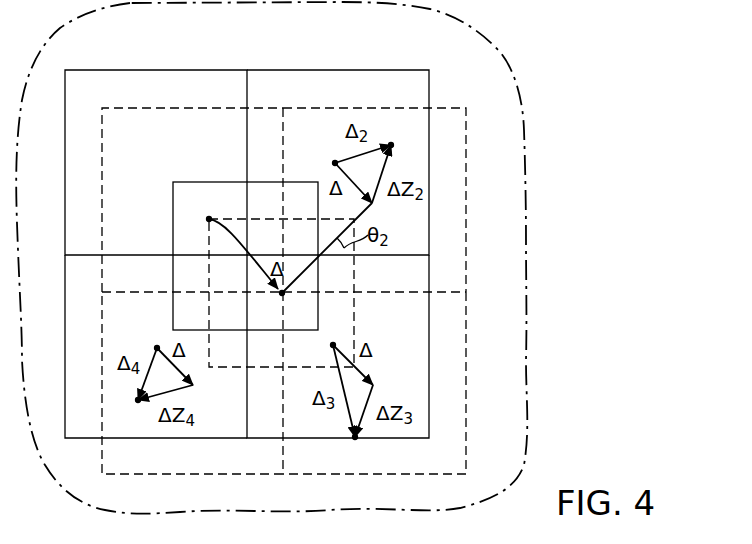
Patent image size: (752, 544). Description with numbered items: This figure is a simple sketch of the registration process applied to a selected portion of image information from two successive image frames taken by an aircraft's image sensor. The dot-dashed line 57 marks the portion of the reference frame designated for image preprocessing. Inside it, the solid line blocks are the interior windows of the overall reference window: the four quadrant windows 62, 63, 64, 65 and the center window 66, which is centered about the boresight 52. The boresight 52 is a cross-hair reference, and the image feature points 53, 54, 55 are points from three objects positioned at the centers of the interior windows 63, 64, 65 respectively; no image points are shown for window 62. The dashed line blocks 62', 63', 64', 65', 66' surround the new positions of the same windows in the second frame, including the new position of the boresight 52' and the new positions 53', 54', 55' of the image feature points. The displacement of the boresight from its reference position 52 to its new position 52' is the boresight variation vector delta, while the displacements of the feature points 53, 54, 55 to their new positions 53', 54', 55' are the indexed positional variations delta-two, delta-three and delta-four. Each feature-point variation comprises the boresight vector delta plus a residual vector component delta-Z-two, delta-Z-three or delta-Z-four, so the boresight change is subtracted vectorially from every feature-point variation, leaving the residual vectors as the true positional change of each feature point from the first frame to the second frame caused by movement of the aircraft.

The portion of the reference frame designated for image preprocessing 57 is at (527, 105).
The interior window 62 is at (156, 145).
The interior window 63 is at (338, 145).
The interior window 64 is at (338, 346).
The interior window 65 is at (156, 346).
The dashed line block 62' is at (192, 187).
The dashed line block 63' is at (374, 187).
The dashed line block 64' is at (376, 383).
The dashed line block 65' is at (192, 383).
The center interior window 66 is at (224, 238).
The dashed line block 66' is at (281, 275).
The boresight 52 is at (227, 252).
The new position of the boresight 52' is at (326, 266).
The image feature point 53 is at (351, 167).
The new position of image feature point 53' is at (402, 161).
The image feature point 54 is at (347, 369).
The new position of image feature point 54' is at (376, 431).
The image feature point 55 is at (162, 356).
The new position of image feature point 55' is at (150, 408).